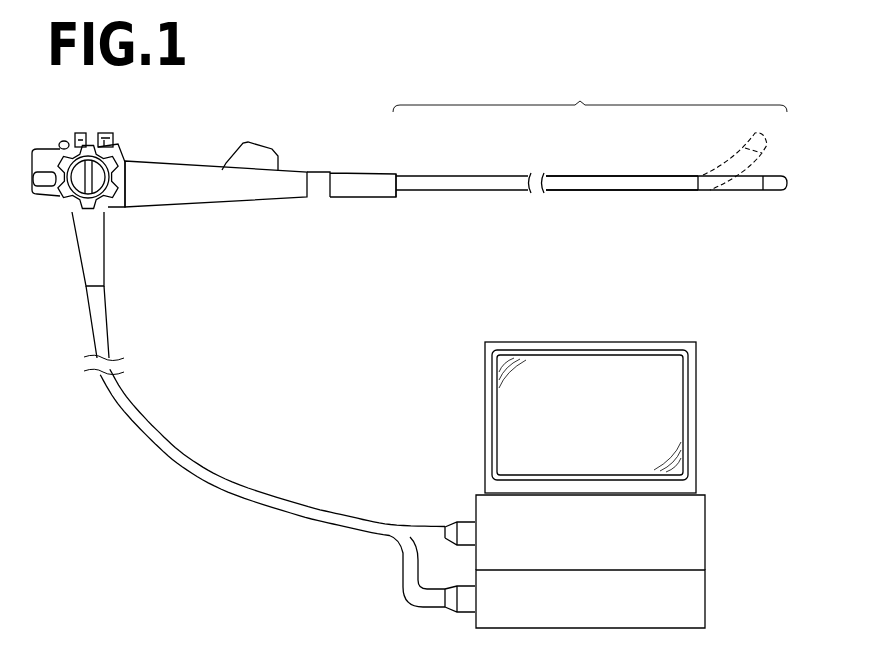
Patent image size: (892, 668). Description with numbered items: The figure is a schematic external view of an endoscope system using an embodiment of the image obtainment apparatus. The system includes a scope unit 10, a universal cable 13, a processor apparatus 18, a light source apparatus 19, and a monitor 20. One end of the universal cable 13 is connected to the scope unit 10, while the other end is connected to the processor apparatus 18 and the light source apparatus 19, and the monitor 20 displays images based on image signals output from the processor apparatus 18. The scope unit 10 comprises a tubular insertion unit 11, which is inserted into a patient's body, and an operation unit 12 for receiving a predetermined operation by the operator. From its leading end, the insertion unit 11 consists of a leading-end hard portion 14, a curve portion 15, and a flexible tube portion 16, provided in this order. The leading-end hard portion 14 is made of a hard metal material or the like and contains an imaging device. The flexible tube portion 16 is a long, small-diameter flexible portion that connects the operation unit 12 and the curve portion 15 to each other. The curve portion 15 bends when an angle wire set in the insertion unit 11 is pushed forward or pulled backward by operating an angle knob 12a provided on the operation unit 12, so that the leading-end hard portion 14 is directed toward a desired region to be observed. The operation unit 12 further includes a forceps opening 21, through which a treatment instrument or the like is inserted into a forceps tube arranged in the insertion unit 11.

The scope unit 10 is at (343, 224).
The insertion unit 11 is at (590, 137).
The operation unit 12 is at (184, 202).
The angle knob 12a is at (88, 142).
The universal cable 13 is at (106, 322).
The leading-end hard portion 14 is at (778, 188).
The curve portion 15 is at (742, 188).
The flexible tube portion 16 is at (593, 182).
The processor apparatus 18 is at (697, 528).
The light source apparatus 19 is at (697, 603).
The monitor 20 is at (556, 345).
The forceps opening 21 is at (232, 151).